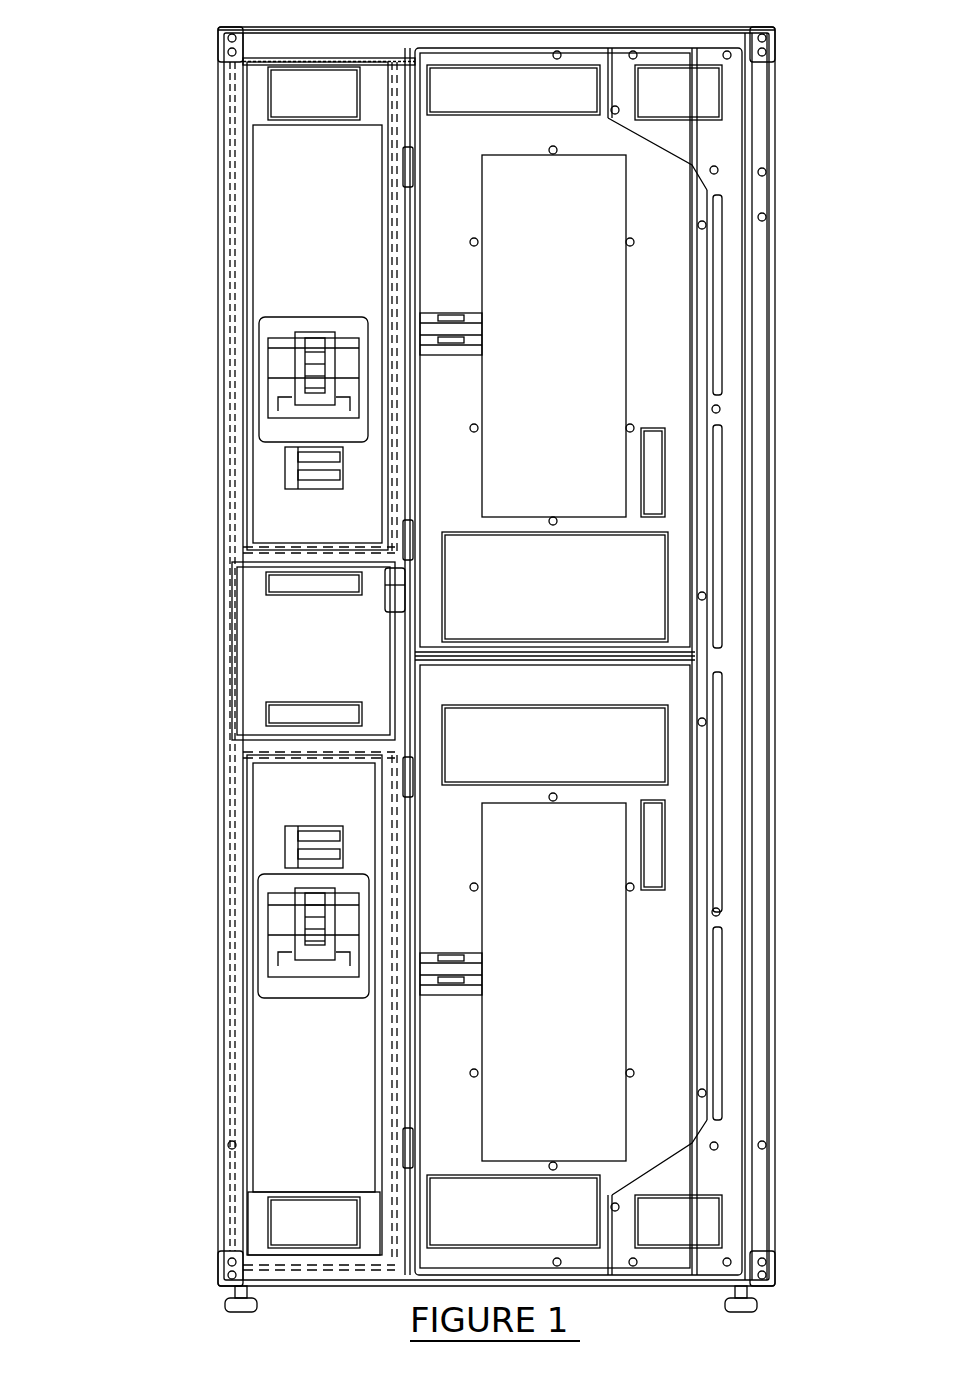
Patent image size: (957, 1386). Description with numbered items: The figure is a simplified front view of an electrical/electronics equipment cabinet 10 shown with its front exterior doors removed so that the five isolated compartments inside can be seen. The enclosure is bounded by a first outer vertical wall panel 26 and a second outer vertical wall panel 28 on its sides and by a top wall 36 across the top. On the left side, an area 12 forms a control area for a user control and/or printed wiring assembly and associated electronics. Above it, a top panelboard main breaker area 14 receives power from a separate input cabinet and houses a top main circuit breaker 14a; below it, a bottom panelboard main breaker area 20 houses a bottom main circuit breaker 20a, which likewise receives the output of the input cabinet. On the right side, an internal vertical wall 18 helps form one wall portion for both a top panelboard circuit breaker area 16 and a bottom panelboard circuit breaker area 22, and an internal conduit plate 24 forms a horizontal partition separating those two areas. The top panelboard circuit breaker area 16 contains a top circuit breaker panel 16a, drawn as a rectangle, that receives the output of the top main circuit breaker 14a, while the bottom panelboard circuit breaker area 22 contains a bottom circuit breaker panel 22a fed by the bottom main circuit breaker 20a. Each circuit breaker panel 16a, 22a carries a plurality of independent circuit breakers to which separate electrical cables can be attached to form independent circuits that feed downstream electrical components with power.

The electrical/electronics equipment cabinet 10 is at (142, 52).
The control area 12 is at (262, 648).
The top panelboard main breaker area 14 is at (280, 276).
The top main circuit breaker 14a is at (310, 398).
The top panelboard circuit breaker area 16 is at (663, 210).
The top circuit breaker panel 16a is at (610, 274).
The internal vertical wall 18 is at (403, 268).
The bottom panelboard main breaker area 20 is at (262, 1058).
The bottom main circuit breaker 20a is at (282, 946).
The bottom panelboard circuit breaker area 22 is at (685, 913).
The bottom circuit breaker panel 22a is at (612, 1047).
The internal conduit plate 24 is at (602, 655).
The first outer vertical wall panel 26 is at (232, 560).
The second outer vertical wall panel 28 is at (762, 548).
The top wall 36 is at (298, 27).